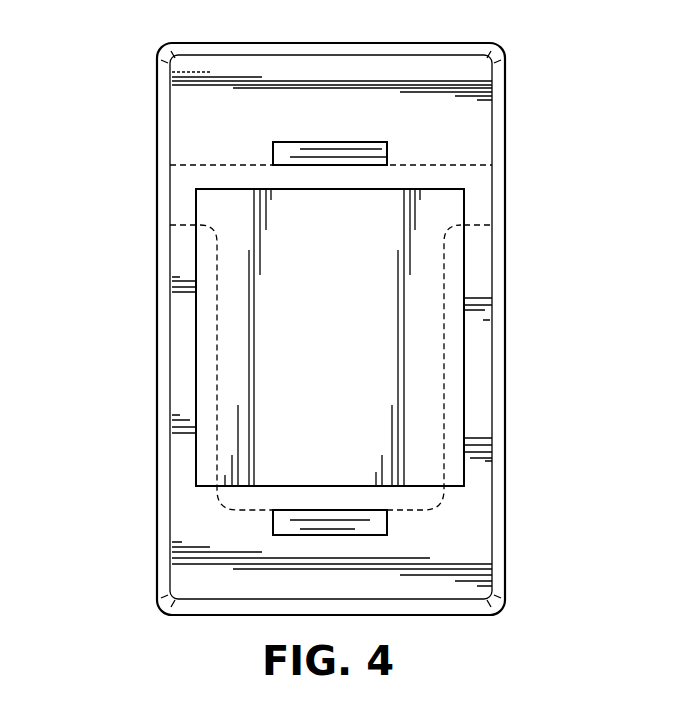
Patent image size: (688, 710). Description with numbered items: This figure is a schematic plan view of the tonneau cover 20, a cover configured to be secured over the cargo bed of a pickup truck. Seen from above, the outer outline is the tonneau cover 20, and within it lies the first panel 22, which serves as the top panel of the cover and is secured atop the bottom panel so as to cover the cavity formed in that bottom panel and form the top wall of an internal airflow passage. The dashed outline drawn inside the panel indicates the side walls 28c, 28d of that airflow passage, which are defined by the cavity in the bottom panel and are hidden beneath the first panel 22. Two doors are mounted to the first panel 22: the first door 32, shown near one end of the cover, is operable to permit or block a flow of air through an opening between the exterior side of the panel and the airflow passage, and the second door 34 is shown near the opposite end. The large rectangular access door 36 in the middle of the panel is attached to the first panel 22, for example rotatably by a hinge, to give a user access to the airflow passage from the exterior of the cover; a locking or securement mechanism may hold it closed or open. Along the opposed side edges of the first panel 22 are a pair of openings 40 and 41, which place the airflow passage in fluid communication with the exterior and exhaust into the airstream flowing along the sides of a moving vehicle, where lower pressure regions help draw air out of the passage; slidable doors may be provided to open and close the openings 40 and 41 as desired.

The tonneau cover 20 is at (116, 57).
The first panel 22 is at (470, 137).
The side wall 28c is at (210, 370).
The side wall 28d is at (463, 362).
The first door 32 is at (287, 520).
The second door 34 is at (290, 147).
The access door 36 is at (465, 346).
The opening 40 is at (168, 199).
The opening 41 is at (505, 200).